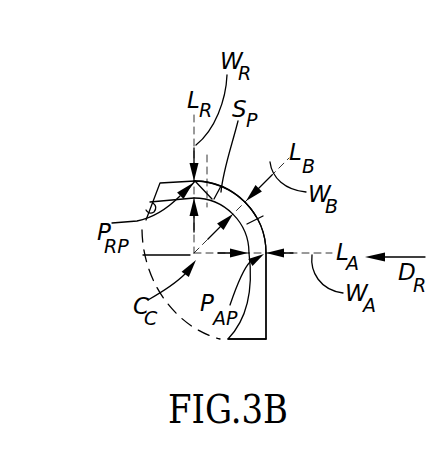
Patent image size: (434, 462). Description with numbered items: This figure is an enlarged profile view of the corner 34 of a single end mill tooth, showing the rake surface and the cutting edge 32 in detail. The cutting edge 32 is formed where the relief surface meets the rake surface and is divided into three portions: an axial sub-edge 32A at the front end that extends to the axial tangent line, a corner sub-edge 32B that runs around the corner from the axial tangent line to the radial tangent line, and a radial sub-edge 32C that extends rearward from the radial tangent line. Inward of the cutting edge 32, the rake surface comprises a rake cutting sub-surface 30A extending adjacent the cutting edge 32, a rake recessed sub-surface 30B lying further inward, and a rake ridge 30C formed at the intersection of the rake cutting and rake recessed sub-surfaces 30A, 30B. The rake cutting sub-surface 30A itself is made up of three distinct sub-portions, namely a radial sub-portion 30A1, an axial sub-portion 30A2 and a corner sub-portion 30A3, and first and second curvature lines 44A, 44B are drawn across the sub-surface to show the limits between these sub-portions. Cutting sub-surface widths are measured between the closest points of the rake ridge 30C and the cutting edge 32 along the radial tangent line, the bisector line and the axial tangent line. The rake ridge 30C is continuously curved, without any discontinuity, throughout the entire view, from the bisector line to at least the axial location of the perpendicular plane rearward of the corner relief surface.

The cutting edge 32 is at (286, 231).
The axial sub-edge 32A is at (257, 300).
The corner sub-edge 32B is at (250, 205).
The radial sub-edge 32C is at (193, 178).
The rake cutting sub-surface 30A is at (190, 180).
The radial sub-portion 30A1 is at (188, 192).
The axial sub-portion 30A2 is at (268, 293).
The corner sub-portion 30A3 is at (229, 185).
The rake recessed sub-surface 30B is at (196, 227).
The rake ridge 30C is at (146, 210).
The corner 34 is at (172, 110).
The first curvature line 44A is at (220, 190).
The second curvature line 44B is at (258, 214).